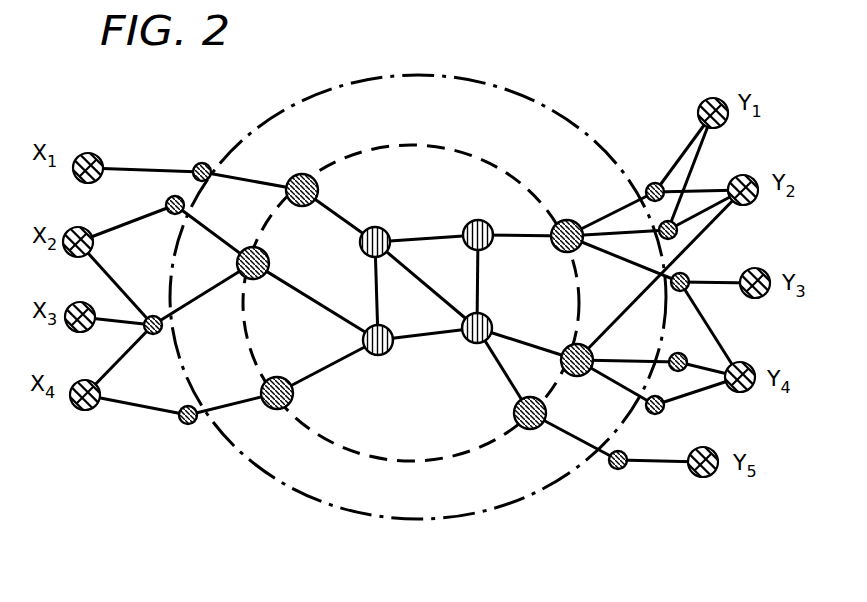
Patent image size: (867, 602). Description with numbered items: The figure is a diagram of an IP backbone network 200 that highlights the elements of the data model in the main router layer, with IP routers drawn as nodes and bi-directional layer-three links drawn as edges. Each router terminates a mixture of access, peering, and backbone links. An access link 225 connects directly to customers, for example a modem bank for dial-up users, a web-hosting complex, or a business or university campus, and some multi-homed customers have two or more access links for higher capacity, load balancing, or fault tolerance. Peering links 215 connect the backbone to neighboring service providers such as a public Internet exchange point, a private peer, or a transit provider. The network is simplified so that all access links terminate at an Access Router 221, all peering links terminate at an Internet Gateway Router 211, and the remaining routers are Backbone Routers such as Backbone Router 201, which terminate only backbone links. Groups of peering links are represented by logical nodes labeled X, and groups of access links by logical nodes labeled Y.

The IP backbone network 200 is at (434, 212).
The backbone router 201 is at (378, 356).
The internet gateway router 211 is at (255, 280).
The peering links 215 is at (117, 174).
The access router 221 is at (523, 430).
The access link 225 is at (703, 319).